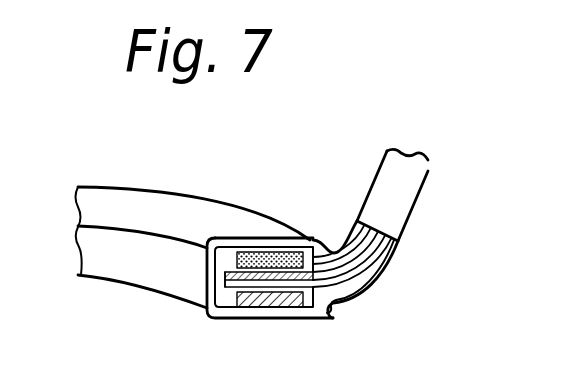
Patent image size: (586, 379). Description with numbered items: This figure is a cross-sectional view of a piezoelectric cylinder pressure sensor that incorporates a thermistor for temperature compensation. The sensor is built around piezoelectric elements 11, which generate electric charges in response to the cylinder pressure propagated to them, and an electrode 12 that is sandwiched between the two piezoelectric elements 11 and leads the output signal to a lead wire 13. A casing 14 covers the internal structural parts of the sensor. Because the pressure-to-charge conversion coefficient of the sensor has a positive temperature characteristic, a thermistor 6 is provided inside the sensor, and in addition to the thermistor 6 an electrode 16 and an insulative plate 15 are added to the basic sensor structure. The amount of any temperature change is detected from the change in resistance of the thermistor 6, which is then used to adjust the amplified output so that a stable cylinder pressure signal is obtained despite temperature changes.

The thermistor 6 is at (262, 256).
The piezoelectric elements 11 is at (264, 308).
The electrode 12 is at (329, 318).
The lead wire 13 is at (401, 204).
The casing 14 is at (225, 241).
The insulative plate 15 is at (300, 240).
The electrode 16 is at (279, 273).